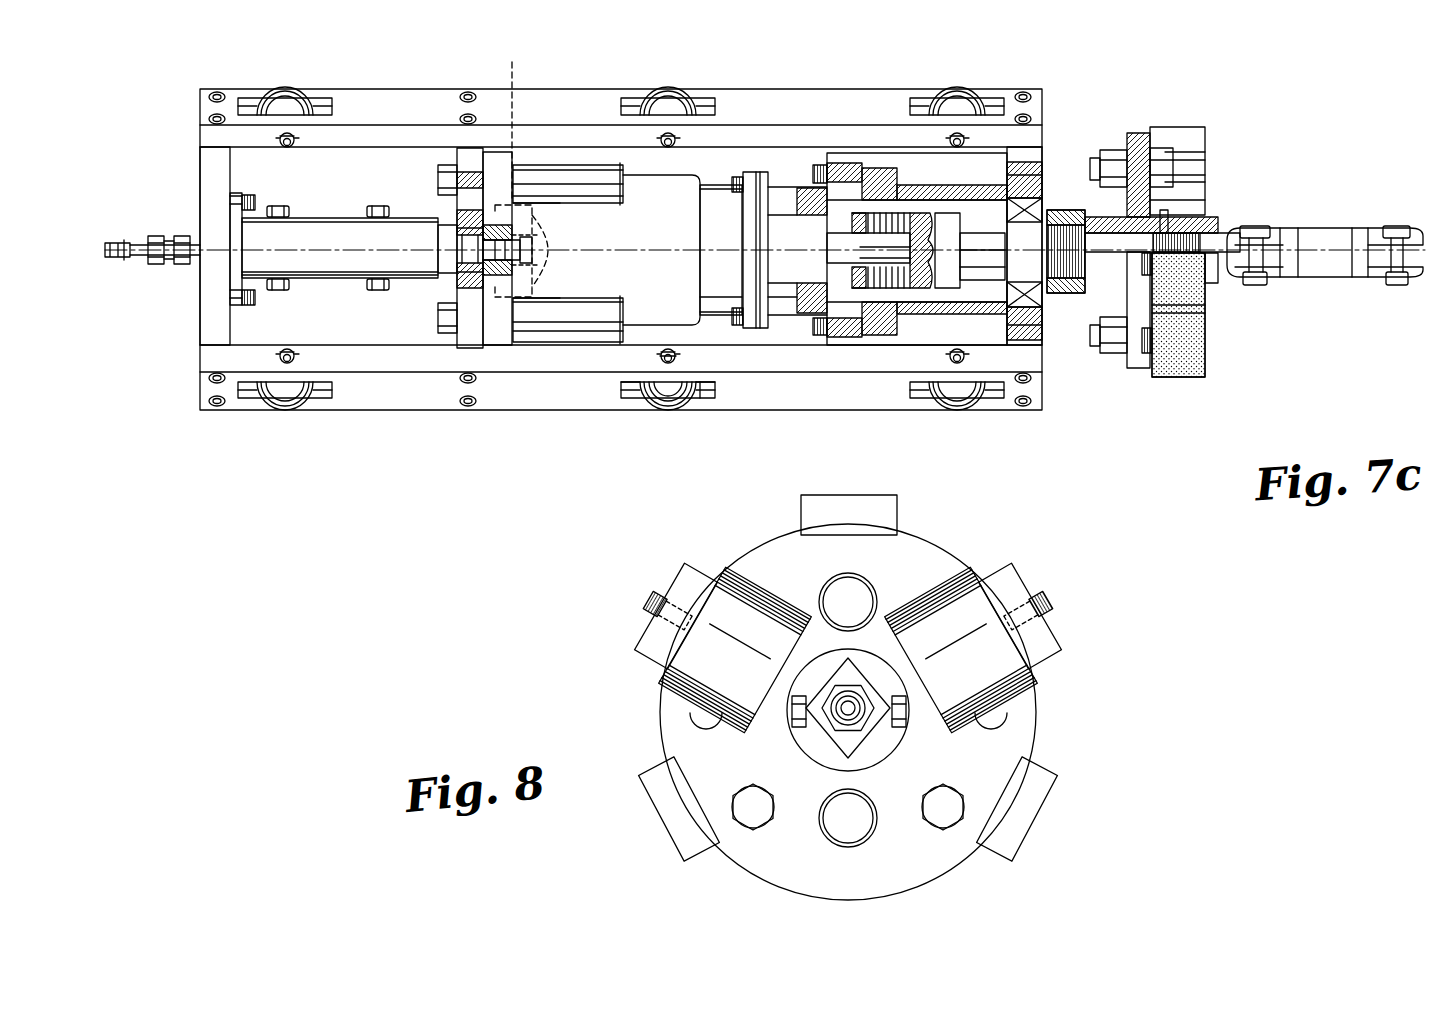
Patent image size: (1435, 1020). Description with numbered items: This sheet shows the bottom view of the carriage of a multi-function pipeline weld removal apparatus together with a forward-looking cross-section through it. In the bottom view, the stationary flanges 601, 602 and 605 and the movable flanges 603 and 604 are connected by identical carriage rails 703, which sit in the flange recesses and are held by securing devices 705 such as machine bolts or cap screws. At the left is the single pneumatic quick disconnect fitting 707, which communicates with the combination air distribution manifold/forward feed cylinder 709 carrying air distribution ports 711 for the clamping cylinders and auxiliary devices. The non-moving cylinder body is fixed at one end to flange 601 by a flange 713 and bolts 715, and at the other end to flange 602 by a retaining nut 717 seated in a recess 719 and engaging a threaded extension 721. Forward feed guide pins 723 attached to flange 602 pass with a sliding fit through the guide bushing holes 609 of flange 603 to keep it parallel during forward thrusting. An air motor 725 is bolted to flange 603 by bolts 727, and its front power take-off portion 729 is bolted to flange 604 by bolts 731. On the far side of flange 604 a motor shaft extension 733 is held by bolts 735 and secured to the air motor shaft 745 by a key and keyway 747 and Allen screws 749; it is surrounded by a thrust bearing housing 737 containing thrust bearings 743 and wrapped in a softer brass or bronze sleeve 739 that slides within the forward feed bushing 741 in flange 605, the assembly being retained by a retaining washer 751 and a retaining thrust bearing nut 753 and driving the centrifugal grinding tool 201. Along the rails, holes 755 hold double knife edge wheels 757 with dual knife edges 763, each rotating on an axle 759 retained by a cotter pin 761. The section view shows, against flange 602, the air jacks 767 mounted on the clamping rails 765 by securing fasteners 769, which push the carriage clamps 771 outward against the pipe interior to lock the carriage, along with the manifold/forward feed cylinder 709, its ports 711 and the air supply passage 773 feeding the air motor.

In FIG. 7C, the centrifugal grinding tool 201 is at (1215, 378).
In FIG. 7C, the stationary flange 601 is at (205, 322).
In FIG. 7C, the stationary flange 602 is at (470, 345).
In FIG. 7C, the movable flange 603 is at (500, 345).
In FIG. 7C, the movable flange 604 is at (810, 325).
In FIG. 7C, the stationary flange 605 is at (1035, 350).
In FIG. 7C, the guide bushing hole 609 is at (497, 200).
In FIG. 7C, the carriage rail 703 is at (230, 89).
In FIG. 8, the carriage rail 703 is at (859, 505).
In FIG. 7C, the securing device 705 is at (210, 401).
In FIG. 7C, the pneumatic quick disconnect fitting 707 is at (160, 268).
In FIG. 7C, the air distribution manifold/forward feed cylinder 709 is at (333, 237).
In FIG. 7C, the air distribution port 711 is at (283, 207).
In FIG. 8, the air distribution port 711 is at (792, 718).
In FIG. 7C, the flange 713 is at (247, 298).
In FIG. 7C, the bolt 715 is at (258, 290).
In FIG. 7C, the retaining nut 717 is at (450, 228).
In FIG. 7C, the recess 719 is at (462, 262).
In FIG. 7C, the threaded extension 721 is at (462, 248).
In FIG. 7C, the forward feed guide pin 723 is at (612, 208).
In FIG. 7C, the air motor 725 is at (700, 300).
In FIG. 7C, the bolt 727 is at (545, 224).
In FIG. 7C, the front power take-off portion 729 is at (755, 330).
In FIG. 7C, the bolt 731 is at (825, 240).
In FIG. 7C, the motor shaft extension 733 is at (1035, 335).
In FIG. 7C, the bolt 735 is at (818, 168).
In FIG. 7C, the thrust bearing housing 737 is at (925, 310).
In FIG. 7C, the sleeve 739 is at (960, 300).
In FIG. 7C, the forward feed bushing 741 is at (1052, 205).
In FIG. 7C, the thrust bearing 743 is at (1092, 325).
In FIG. 7C, the air motor shaft 745 is at (895, 275).
In FIG. 7C, the key and keyway 747 is at (882, 230).
In FIG. 7C, the Allen screw 749 is at (920, 210).
In FIG. 7C, the retaining washer 751 is at (1082, 215).
In FIG. 7C, the retaining thrust bearing nut 753 is at (1100, 225).
In FIG. 7C, the hole 755 is at (708, 398).
In FIG. 7C, the wheel 757 is at (632, 398).
In FIG. 7C, the axle 759 is at (663, 365).
In FIG. 7C, the cotter pin 761 is at (668, 405).
In FIG. 7C, the dual knife edge 763 is at (300, 408).
In FIG. 8, the clamping rail 765 is at (684, 598).
In FIG. 8, the air jack 767 is at (735, 612).
In FIG. 8, the securing fastener 769 is at (660, 665).
In FIG. 8, the carriage clamp 771 is at (1025, 610).
In FIG. 8, the air supply passage 773 is at (862, 728).